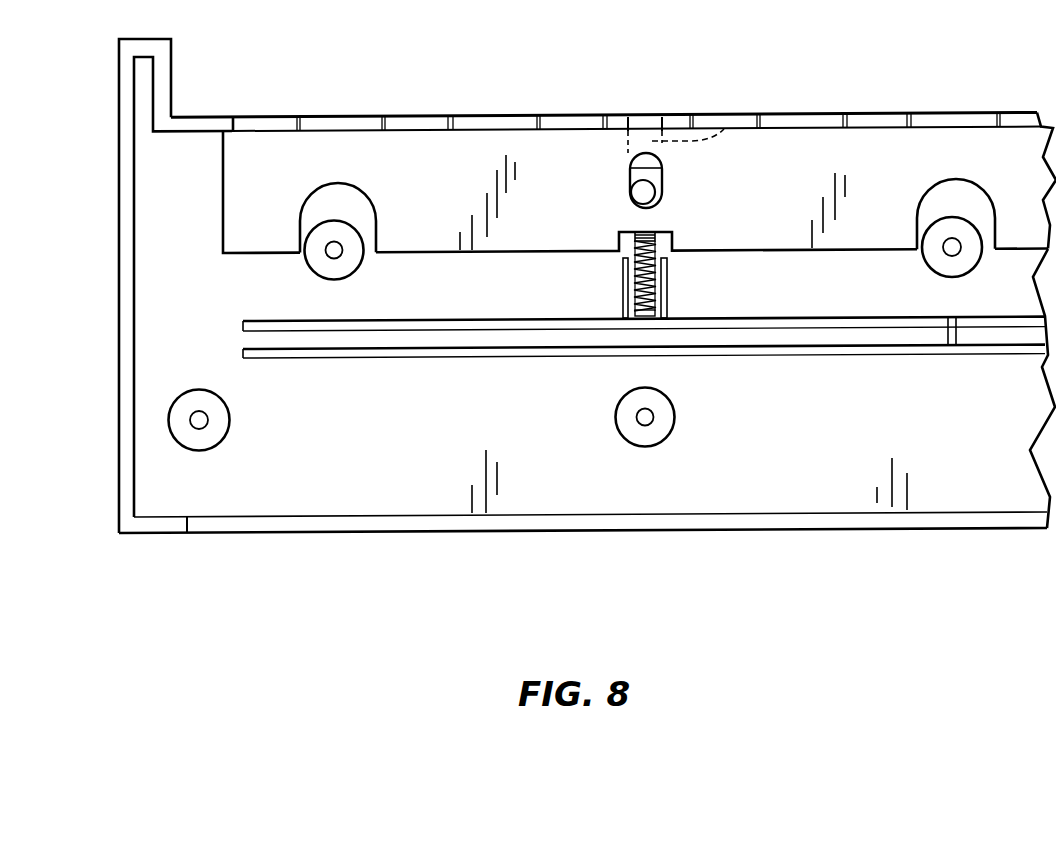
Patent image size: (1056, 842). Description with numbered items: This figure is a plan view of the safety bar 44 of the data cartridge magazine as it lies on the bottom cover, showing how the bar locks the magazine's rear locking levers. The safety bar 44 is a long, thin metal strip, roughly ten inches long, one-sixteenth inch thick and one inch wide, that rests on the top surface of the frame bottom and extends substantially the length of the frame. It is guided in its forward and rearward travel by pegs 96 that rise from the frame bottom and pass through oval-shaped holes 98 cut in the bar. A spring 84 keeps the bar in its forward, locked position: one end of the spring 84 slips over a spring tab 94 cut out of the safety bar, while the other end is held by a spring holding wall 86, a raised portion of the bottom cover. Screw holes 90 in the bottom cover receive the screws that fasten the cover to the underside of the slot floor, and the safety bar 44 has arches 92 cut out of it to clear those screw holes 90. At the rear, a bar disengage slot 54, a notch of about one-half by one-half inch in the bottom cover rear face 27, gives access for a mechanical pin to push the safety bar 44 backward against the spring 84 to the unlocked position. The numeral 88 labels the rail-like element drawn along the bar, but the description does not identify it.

The bottom cover rear face 27 is at (348, 116).
The safety bar 44 is at (885, 147).
The bar disengage slot 54 is at (730, 127).
The spring 84 is at (653, 288).
The spring holding wall 86 is at (623, 292).
The track rail 88 is at (830, 335).
The screw holes 90 is at (331, 254).
The arches 92 is at (307, 202).
The spring tab 94 is at (657, 247).
The pegs 96 is at (640, 193).
The oval-shaped holes 98 is at (663, 182).